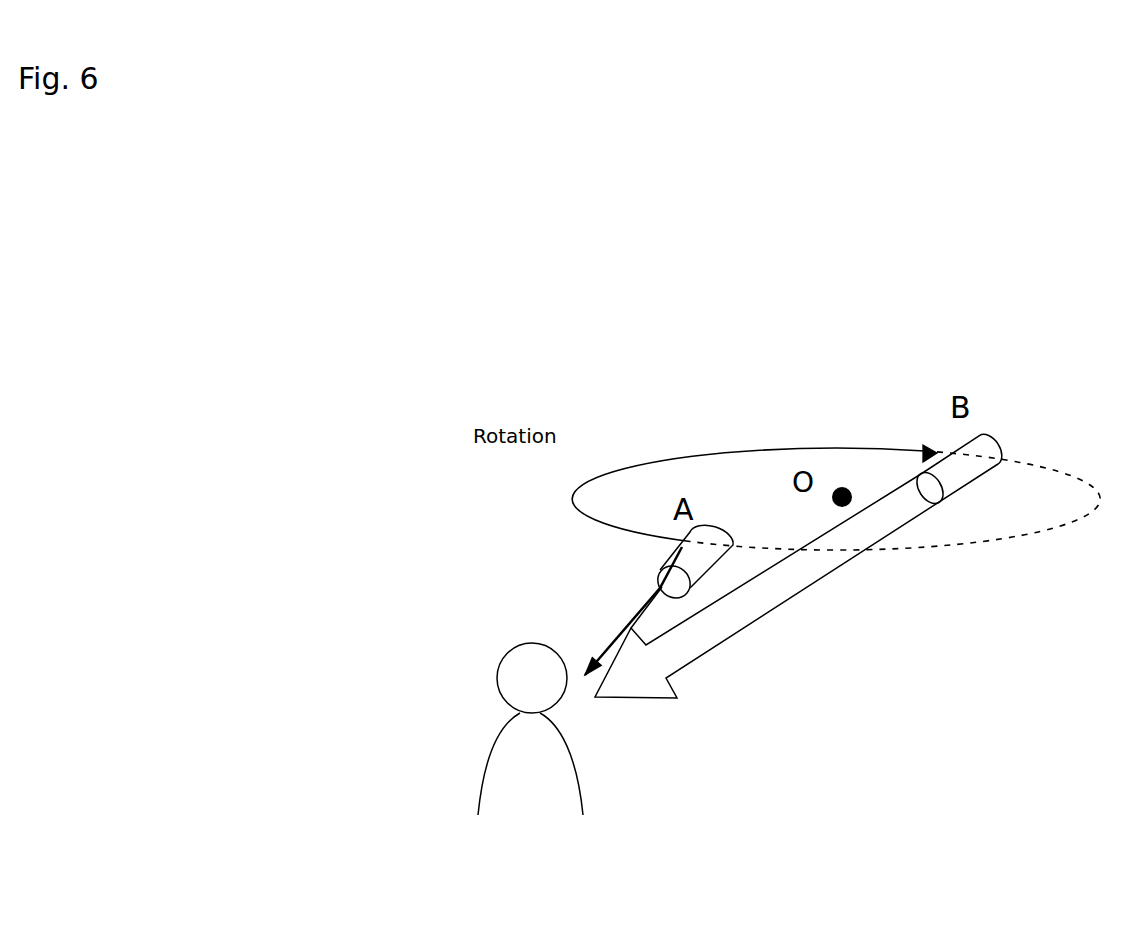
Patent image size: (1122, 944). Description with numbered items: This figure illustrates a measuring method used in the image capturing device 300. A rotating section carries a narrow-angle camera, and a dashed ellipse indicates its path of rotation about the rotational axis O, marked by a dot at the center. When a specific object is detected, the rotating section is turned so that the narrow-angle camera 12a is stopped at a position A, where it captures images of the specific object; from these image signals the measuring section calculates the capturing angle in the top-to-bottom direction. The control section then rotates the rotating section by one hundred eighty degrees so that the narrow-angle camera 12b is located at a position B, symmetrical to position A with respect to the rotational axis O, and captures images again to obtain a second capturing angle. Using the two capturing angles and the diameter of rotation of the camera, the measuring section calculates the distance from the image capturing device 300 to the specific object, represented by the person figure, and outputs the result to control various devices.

The narrow-angle camera located at position A 12a is at (673, 550).
The narrow-angle camera located at position B 12b is at (983, 433).
The image capturing device 300 is at (840, 839).